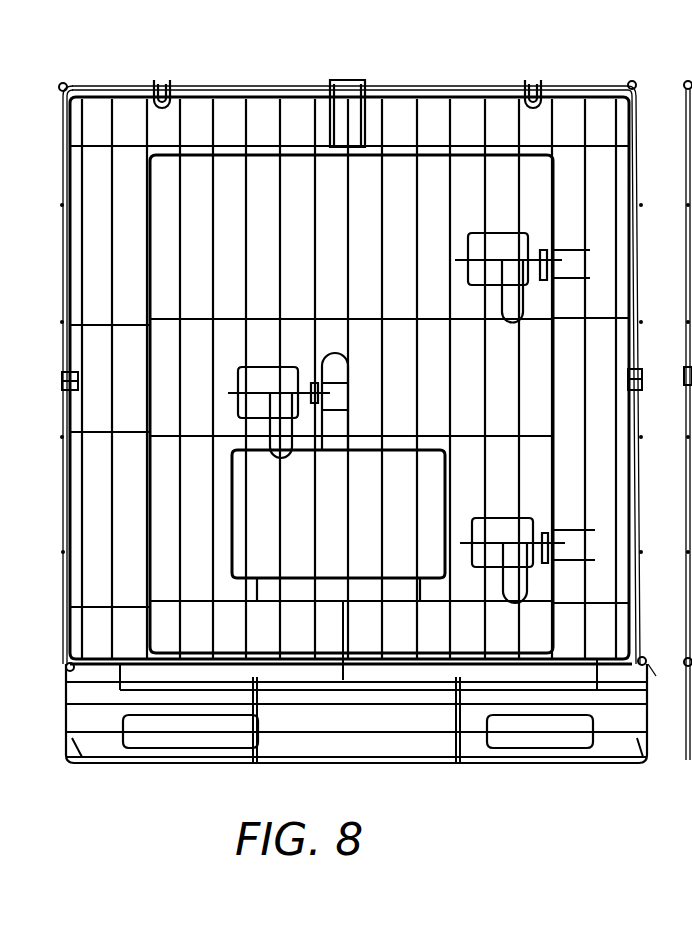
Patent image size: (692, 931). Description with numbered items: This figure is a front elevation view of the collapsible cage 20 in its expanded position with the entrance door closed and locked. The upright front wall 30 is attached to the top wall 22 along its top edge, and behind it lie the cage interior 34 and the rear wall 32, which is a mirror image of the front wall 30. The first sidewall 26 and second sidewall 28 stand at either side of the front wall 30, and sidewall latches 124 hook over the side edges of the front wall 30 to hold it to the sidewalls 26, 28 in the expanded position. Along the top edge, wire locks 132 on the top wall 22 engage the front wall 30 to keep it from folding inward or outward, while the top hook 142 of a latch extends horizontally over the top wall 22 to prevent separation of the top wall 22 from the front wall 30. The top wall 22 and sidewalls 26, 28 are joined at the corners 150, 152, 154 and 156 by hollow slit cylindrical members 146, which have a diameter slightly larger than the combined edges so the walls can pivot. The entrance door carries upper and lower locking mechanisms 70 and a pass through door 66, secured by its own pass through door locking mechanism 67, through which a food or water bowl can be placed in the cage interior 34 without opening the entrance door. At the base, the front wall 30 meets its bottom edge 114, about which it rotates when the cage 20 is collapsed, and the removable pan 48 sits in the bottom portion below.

The collapsible cage 20 is at (305, 82).
The top wall 22 is at (427, 86).
The first sidewall 26 is at (638, 183).
The second sidewall 28 is at (63, 272).
The front wall 30 is at (284, 126).
The rear wall 32 is at (396, 276).
The cage interior 34 is at (519, 392).
The removable pan 48 is at (613, 743).
The pass through door 66 is at (387, 500).
The pass through door locking mechanism 67 is at (268, 360).
The locking mechanism 70 is at (501, 226).
The bottom edge 114 is at (547, 682).
The sidewall latch 124 is at (66, 374).
The wire lock 132 is at (168, 108).
The top hook 142 is at (349, 84).
The hollow slit cylindrical member 146 is at (61, 92).
The corner 150 is at (615, 76).
The corner 152 is at (656, 680).
The corner 154 is at (61, 628).
The corner 156 is at (70, 84).